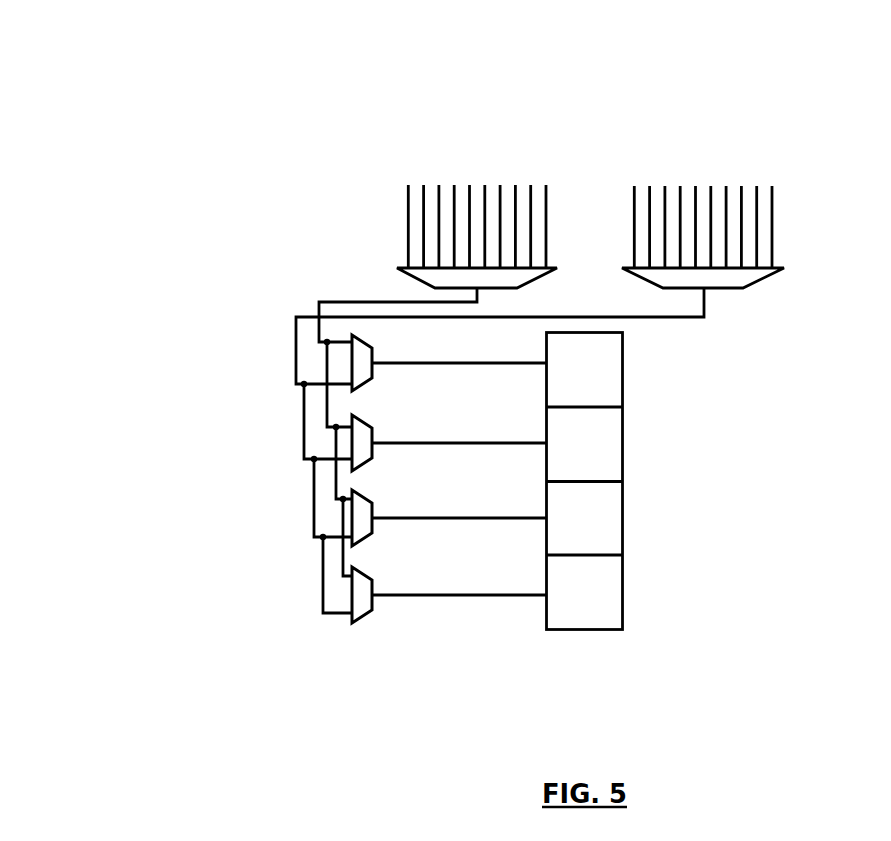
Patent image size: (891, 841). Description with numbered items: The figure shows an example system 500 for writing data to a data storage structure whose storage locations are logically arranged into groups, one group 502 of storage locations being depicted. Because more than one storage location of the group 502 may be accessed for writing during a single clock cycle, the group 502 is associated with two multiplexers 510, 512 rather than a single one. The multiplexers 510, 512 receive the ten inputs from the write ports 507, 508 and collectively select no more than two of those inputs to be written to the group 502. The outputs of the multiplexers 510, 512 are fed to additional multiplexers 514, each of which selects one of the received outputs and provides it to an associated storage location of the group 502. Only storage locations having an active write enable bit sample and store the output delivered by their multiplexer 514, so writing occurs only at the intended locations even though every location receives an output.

The system 500 is at (150, 115).
The group of storage locations 502 is at (585, 507).
The write ports 507 is at (474, 189).
The write ports 508 is at (704, 186).
The multiplexer 510 is at (390, 271).
The multiplexer 512 is at (788, 272).
The additional multiplexers 514 is at (430, 503).